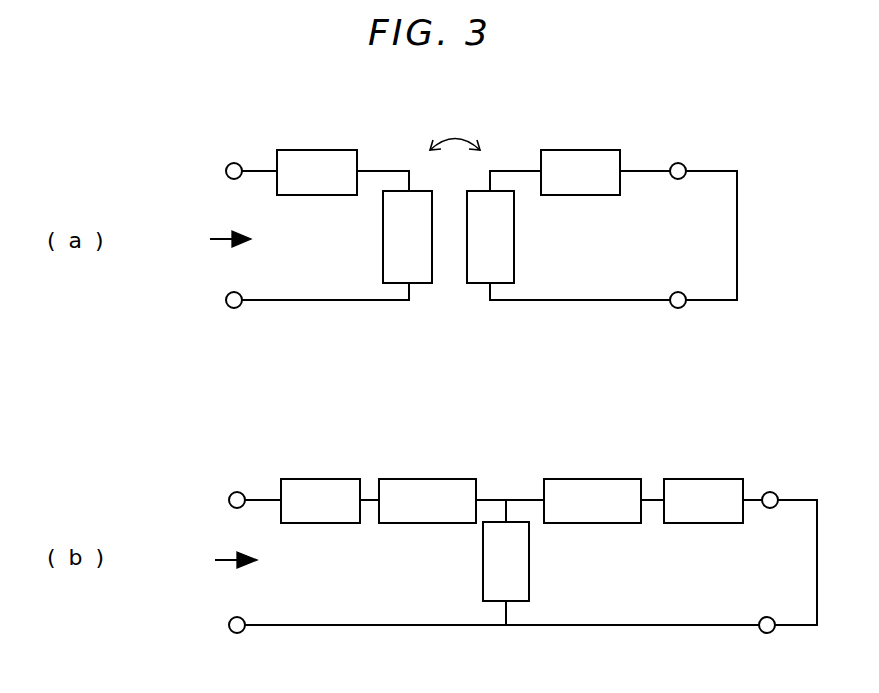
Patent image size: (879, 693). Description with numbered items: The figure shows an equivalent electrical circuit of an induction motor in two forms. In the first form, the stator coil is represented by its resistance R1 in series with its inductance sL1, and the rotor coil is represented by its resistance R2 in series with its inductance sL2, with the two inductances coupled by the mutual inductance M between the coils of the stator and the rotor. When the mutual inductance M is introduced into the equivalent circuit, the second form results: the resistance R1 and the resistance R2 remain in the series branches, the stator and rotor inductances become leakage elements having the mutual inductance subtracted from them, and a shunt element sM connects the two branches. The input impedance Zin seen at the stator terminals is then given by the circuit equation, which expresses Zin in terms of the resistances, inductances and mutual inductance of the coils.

The stator coil resistance R1 is at (317, 172).
The rotor coil resistance R2 is at (580, 172).
The stator coil inductance sL1 is at (407, 237).
The rotor coil inductance sL2 is at (490, 237).
The mutual inductance M is at (455, 132).
The mutual inductance element sM is at (506, 561).
The input impedance Zin is at (207, 240).